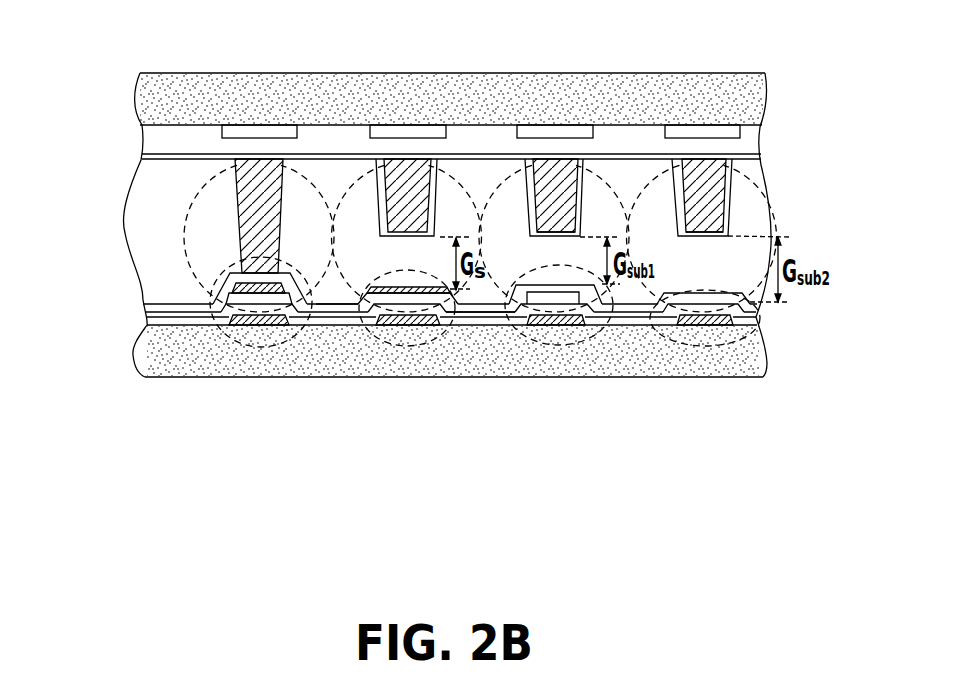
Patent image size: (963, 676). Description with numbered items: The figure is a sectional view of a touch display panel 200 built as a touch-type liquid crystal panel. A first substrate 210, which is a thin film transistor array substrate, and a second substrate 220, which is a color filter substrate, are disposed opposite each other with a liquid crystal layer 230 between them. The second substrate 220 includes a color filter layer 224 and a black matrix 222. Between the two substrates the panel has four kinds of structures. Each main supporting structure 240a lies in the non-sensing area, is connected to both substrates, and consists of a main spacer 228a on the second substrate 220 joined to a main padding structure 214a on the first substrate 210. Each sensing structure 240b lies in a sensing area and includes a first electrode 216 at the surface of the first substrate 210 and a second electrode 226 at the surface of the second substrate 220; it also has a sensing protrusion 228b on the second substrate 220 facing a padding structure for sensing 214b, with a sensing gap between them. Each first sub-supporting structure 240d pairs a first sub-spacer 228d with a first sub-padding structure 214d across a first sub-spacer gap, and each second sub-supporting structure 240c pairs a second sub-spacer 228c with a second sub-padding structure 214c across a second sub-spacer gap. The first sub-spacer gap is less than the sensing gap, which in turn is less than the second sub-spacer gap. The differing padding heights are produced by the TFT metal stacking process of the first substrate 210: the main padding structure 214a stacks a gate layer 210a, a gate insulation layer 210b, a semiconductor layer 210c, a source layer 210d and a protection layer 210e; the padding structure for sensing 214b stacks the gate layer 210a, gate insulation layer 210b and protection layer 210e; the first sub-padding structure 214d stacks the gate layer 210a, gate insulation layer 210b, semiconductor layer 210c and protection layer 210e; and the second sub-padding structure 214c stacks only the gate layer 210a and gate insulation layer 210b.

The touch display panel 200 is at (862, 484).
The first substrate 210 is at (737, 347).
The gate layer 210a is at (227, 322).
The gate insulation layer 210b is at (213, 314).
The semiconductor layer 210c is at (222, 313).
The source layer 210d is at (233, 297).
The protection layer 210e is at (240, 273).
The main padding structure 214a is at (235, 321).
The padding structure for sensing 214b is at (377, 321).
The second sub-padding structure 214c is at (668, 322).
The first sub-padding structure 214d is at (528, 322).
The first electrode 216 is at (387, 240).
The second substrate 220 is at (737, 103).
The black matrix 222 is at (718, 129).
The color filter layer 224 is at (743, 140).
The second electrode 226 is at (379, 238).
The main spacer 228a is at (258, 226).
The sensing protrusion 228b is at (410, 212).
The second sub-spacer 228c is at (703, 213).
The first sub-spacer 228d is at (557, 213).
The liquid crystal layer 230 is at (738, 168).
The main supporting structure 240a is at (228, 186).
The sensing structure 240b is at (378, 192).
The second sub-supporting structure 240c is at (675, 192).
The first sub-supporting structure 240d is at (526, 192).